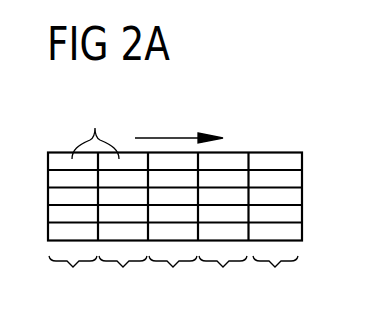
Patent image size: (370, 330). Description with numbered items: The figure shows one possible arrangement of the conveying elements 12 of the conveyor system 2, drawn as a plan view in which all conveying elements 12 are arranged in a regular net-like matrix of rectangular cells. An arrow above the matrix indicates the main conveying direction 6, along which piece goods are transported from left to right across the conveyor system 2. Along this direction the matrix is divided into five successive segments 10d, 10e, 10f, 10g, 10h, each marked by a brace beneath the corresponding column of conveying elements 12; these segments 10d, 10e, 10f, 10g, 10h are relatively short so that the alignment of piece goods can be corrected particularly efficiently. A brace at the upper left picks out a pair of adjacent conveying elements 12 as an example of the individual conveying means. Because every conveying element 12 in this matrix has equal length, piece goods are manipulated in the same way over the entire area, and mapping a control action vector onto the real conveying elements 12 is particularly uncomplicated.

The conveyor system 2 is at (270, 122).
The main conveying direction 6 is at (178, 137).
The conveying element 12 is at (95, 127).
The segment 10d is at (73, 282).
The segment 10e is at (123, 282).
The segment 10f is at (173, 282).
The segment 10g is at (223, 282).
The segment 10h is at (275, 282).